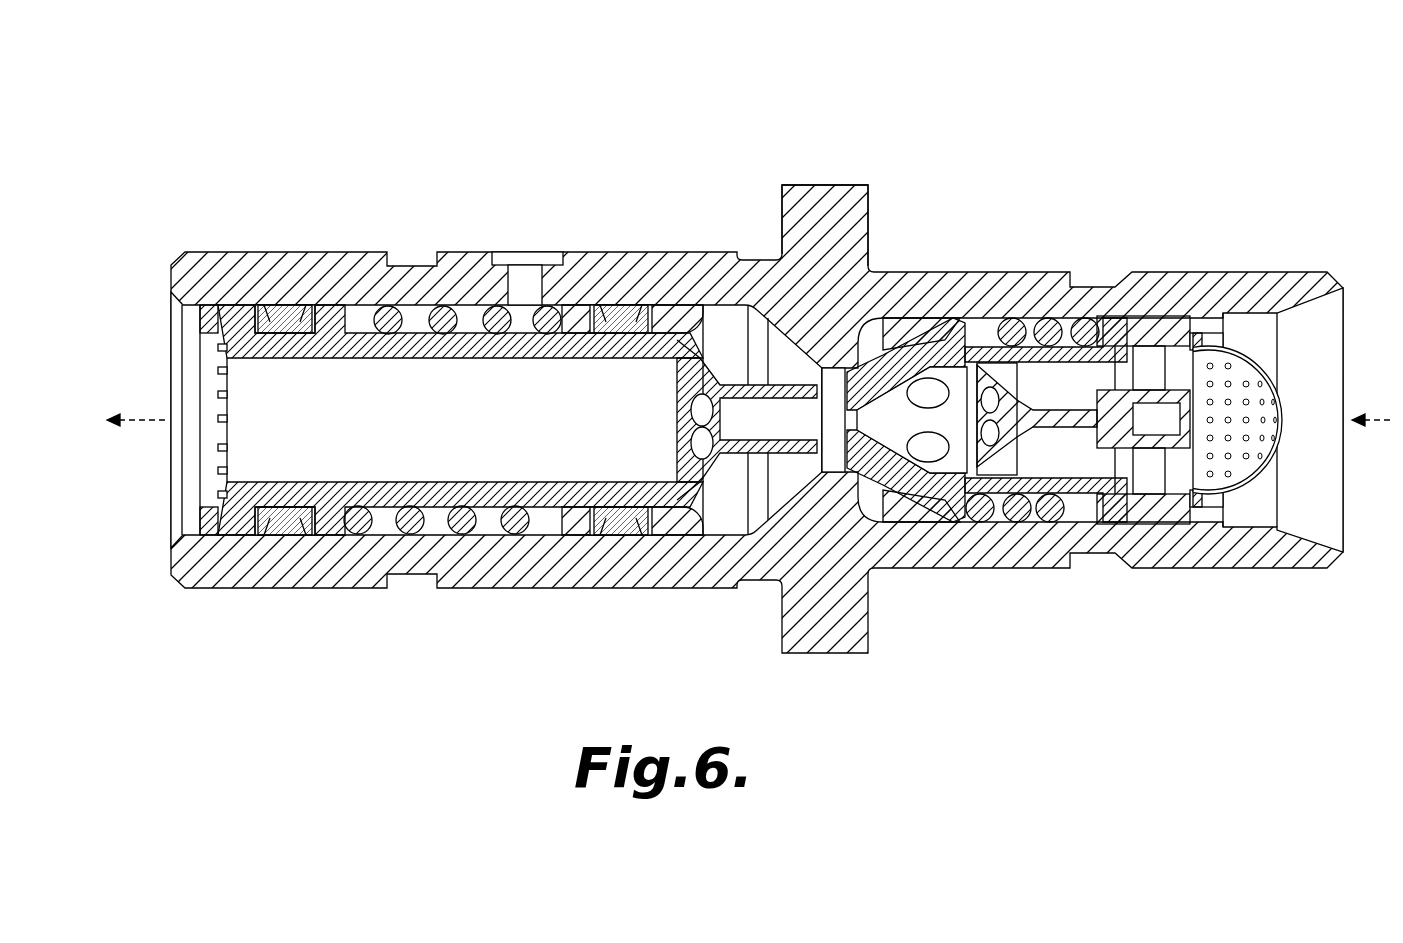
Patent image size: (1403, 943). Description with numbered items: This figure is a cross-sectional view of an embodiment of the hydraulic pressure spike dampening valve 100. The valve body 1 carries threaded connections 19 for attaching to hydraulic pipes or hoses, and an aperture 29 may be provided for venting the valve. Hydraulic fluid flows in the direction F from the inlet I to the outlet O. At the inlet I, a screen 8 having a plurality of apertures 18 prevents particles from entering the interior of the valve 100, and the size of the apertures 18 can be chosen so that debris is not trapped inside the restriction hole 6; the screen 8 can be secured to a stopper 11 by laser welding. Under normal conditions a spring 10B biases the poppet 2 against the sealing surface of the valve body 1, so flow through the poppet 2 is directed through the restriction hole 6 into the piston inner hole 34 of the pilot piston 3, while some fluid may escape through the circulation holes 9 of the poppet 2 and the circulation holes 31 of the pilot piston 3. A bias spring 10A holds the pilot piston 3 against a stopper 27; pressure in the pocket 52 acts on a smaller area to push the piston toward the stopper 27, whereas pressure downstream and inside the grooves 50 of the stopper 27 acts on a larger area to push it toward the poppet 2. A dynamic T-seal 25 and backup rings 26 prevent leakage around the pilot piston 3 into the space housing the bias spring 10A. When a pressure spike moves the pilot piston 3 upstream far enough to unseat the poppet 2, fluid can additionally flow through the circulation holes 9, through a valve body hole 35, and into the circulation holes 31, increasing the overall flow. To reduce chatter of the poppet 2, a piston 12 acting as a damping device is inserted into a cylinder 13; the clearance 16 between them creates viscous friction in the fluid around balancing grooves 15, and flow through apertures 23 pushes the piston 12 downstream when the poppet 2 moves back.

The hydraulic pressure spike dampening valve 100 is at (901, 95).
The valve body 1 is at (855, 188).
The poppet 2 is at (950, 318).
The pilot piston 3 is at (330, 318).
The restriction hole 6 is at (888, 472).
The screen 8 is at (1270, 372).
The circulation holes 9 is at (935, 464).
The bias spring 10A is at (462, 522).
The spring 10B is at (1050, 522).
The stopper 11 is at (1175, 362).
The piston 12 is at (1065, 348).
The cylinder 13 is at (1197, 452).
The balancing grooves 15 is at (1140, 390).
The clearance 16 is at (1160, 450).
The apertures 18 is at (1262, 455).
The threaded connection 19 is at (252, 582).
The apertures 23 is at (990, 445).
The dynamic T-seal 25 is at (262, 305).
The backup rings 26 is at (287, 305).
The stopper 27 is at (205, 522).
The aperture 29 is at (525, 290).
The circulation holes 31 is at (692, 445).
The piston inner hole 34 is at (785, 432).
The valve body hole 35 is at (833, 445).
The grooves 50 is at (218, 418).
The pocket 52 is at (725, 345).
The inlet I is at (1338, 318).
The outlet O is at (190, 470).
The flow direction F is at (752, 410).